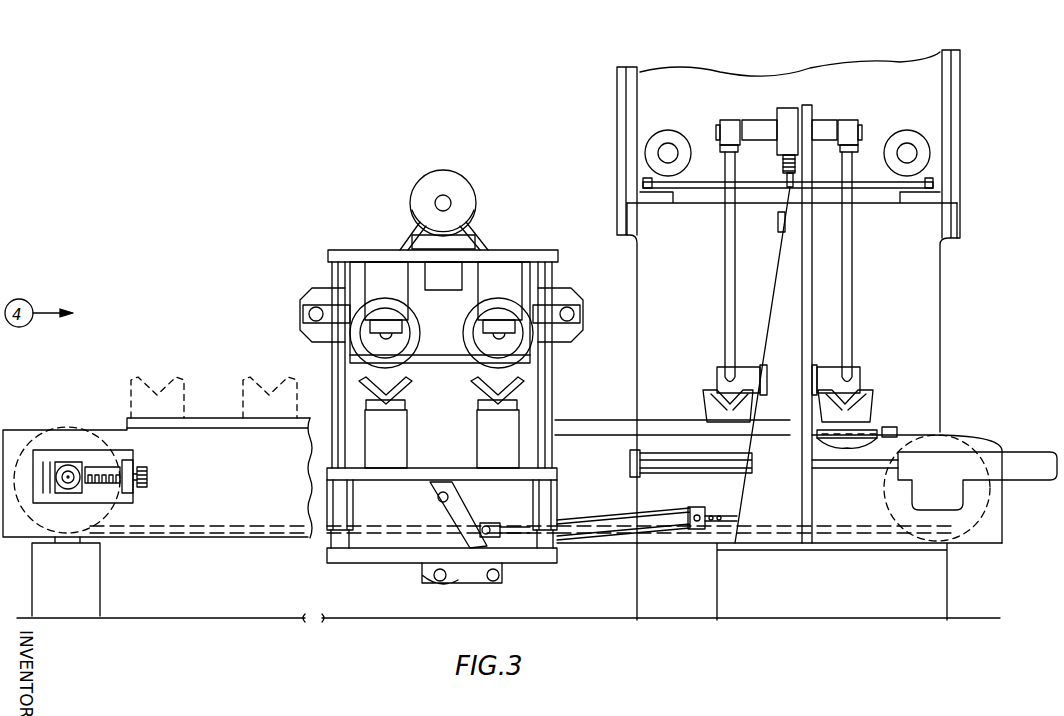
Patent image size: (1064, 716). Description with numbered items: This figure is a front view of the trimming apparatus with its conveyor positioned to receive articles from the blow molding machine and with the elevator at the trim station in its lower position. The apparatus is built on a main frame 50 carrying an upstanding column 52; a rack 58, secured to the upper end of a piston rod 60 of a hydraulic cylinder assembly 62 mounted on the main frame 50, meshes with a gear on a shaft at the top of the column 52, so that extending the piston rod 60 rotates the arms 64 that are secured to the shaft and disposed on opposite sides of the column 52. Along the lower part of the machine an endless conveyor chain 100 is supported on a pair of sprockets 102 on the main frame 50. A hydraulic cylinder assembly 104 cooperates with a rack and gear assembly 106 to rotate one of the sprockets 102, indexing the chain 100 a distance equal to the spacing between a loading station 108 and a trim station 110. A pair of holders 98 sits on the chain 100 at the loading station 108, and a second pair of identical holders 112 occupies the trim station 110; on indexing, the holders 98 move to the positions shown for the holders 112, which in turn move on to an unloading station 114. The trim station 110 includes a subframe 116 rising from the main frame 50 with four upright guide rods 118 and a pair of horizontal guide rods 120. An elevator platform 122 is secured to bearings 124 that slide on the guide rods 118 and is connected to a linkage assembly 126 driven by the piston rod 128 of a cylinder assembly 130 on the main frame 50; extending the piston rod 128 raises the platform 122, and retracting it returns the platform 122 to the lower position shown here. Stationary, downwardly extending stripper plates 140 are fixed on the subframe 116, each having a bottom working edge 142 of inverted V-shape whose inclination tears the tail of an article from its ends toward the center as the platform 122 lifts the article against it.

The main frame 50 is at (784, 598).
The upstanding column 52 is at (802, 437).
The rack 58 is at (782, 166).
The piston rod 60 is at (789, 184).
The hydraulic cylinder assembly 62 is at (778, 224).
The arms 64 is at (725, 272).
The holders 98 is at (735, 421).
The conveyor chain 100 is at (873, 427).
The sprockets 102 is at (110, 443).
The hydraulic cylinder assembly 104 is at (727, 470).
The rack and gear assembly 106 is at (970, 460).
The loading station 108 is at (887, 378).
The trim station 110 is at (531, 374).
The holders 112 is at (150, 372).
The unloading station 114 is at (213, 375).
The subframe 116 is at (543, 247).
The upright guide rods 118 is at (548, 405).
The horizontal guide rods 120 is at (310, 300).
The elevator platform 122 is at (450, 468).
The bearings 124 is at (555, 495).
The linkage assembly 126 is at (490, 497).
The piston rod 128 is at (521, 527).
The cylinder assembly 130 is at (617, 518).
The stripper plate 140 is at (486, 326).
The working edge 142 is at (482, 340).